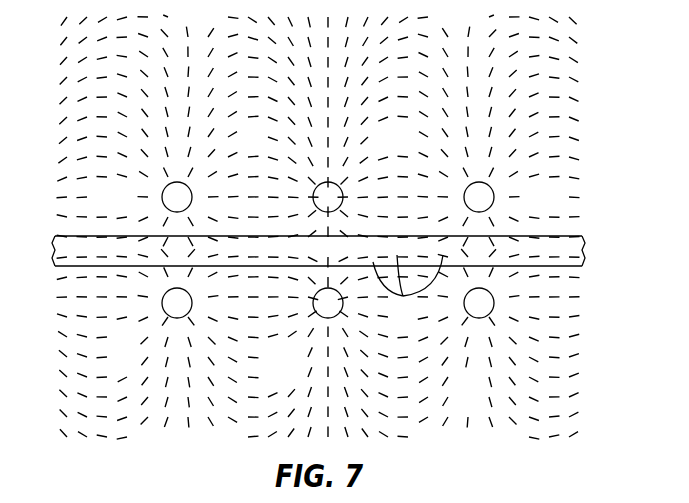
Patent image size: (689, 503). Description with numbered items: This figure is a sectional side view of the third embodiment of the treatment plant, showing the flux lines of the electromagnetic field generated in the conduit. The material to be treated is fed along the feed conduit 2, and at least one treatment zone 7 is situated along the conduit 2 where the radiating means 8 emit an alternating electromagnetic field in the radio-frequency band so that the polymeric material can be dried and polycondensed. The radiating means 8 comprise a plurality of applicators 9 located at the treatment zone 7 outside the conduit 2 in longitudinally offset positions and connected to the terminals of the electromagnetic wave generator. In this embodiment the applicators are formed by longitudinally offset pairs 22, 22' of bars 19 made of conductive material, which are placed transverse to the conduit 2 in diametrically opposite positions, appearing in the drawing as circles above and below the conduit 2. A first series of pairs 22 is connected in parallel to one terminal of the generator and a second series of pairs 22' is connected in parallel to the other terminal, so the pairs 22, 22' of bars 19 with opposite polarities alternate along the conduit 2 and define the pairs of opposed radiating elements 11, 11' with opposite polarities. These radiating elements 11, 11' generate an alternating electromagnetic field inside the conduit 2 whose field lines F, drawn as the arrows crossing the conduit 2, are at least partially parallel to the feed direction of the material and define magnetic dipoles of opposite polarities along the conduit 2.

The feed conduit 2 is at (55, 243).
The treatment zone 7 is at (570, 118).
The radiating means 8 is at (88, 132).
The applicators 9 is at (437, 312).
The radiating element 11 is at (243, 159).
The radiating element 11' is at (405, 160).
The bars 19 is at (172, 318).
The pairs of bars 22 is at (329, 215).
The pairs of bars 22' is at (297, 337).
The field lines F is at (408, 290).